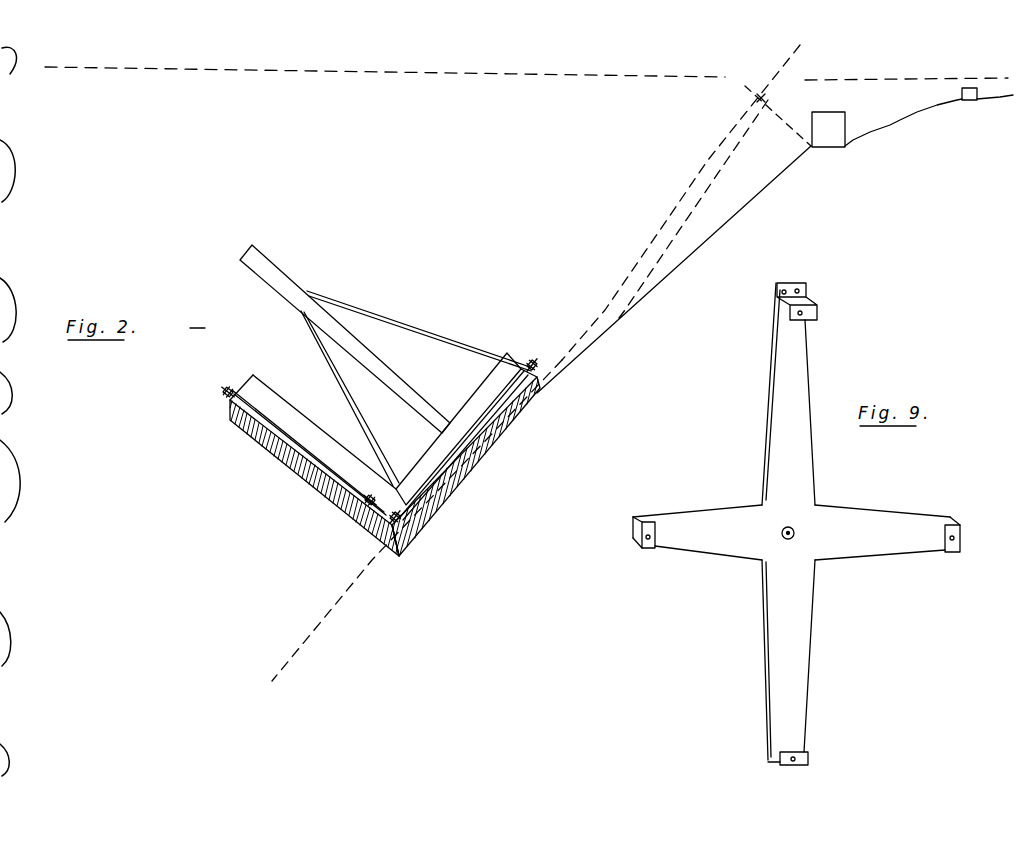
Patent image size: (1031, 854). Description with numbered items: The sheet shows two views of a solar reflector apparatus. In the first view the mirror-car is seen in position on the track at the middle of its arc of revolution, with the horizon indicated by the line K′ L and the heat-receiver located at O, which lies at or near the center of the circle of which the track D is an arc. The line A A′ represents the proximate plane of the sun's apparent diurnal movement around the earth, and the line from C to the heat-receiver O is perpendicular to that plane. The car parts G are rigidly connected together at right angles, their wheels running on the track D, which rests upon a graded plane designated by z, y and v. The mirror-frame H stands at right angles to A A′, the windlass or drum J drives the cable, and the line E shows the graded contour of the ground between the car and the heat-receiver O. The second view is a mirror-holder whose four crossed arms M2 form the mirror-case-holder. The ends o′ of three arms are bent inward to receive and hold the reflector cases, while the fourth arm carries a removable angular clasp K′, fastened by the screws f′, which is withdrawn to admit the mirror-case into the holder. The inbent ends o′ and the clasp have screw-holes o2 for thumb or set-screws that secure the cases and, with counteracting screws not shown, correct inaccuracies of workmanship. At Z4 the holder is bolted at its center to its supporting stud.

In FIG. 2, the horizon line / removable clasp K′ is at (373, 66).
In FIG. 9, the horizon line / removable clasp K′ is at (808, 302).
In FIG. 2, the horizon line end L is at (912, 72).
In FIG. 2, the perpendicular line point C is at (769, 106).
In FIG. 2, the proximate plane of the sun's diurnal movement A is at (694, 195).
In FIG. 2, the proximate plane of the sun's diurnal movement A′ is at (404, 530).
In FIG. 2, the graded plane of the track y is at (772, 105).
In FIG. 2, the heat-receiver O is at (828, 129).
In FIG. 2, the windlass or drum J is at (961, 92).
In FIG. 2, the graded contour of the ground E is at (674, 269).
In FIG. 2, the mirror-frame H is at (385, 365).
In FIG. 2, the car parts G is at (458, 429).
In FIG. 2, the track D is at (379, 462).
In FIG. 2, the graded plane of the track z is at (539, 368).
In FIG. 2, the graded plane of the track v is at (391, 554).
In FIG. 9, the mirror-case-holder arms M2 is at (796, 522).
In FIG. 9, the bolting point of holder Z4 is at (799, 539).
In FIG. 9, the screws f′ is at (785, 290).
In FIG. 9, the inbent ends of arms o′ is at (818, 318).
In FIG. 9, the screw-holes o2 is at (800, 316).